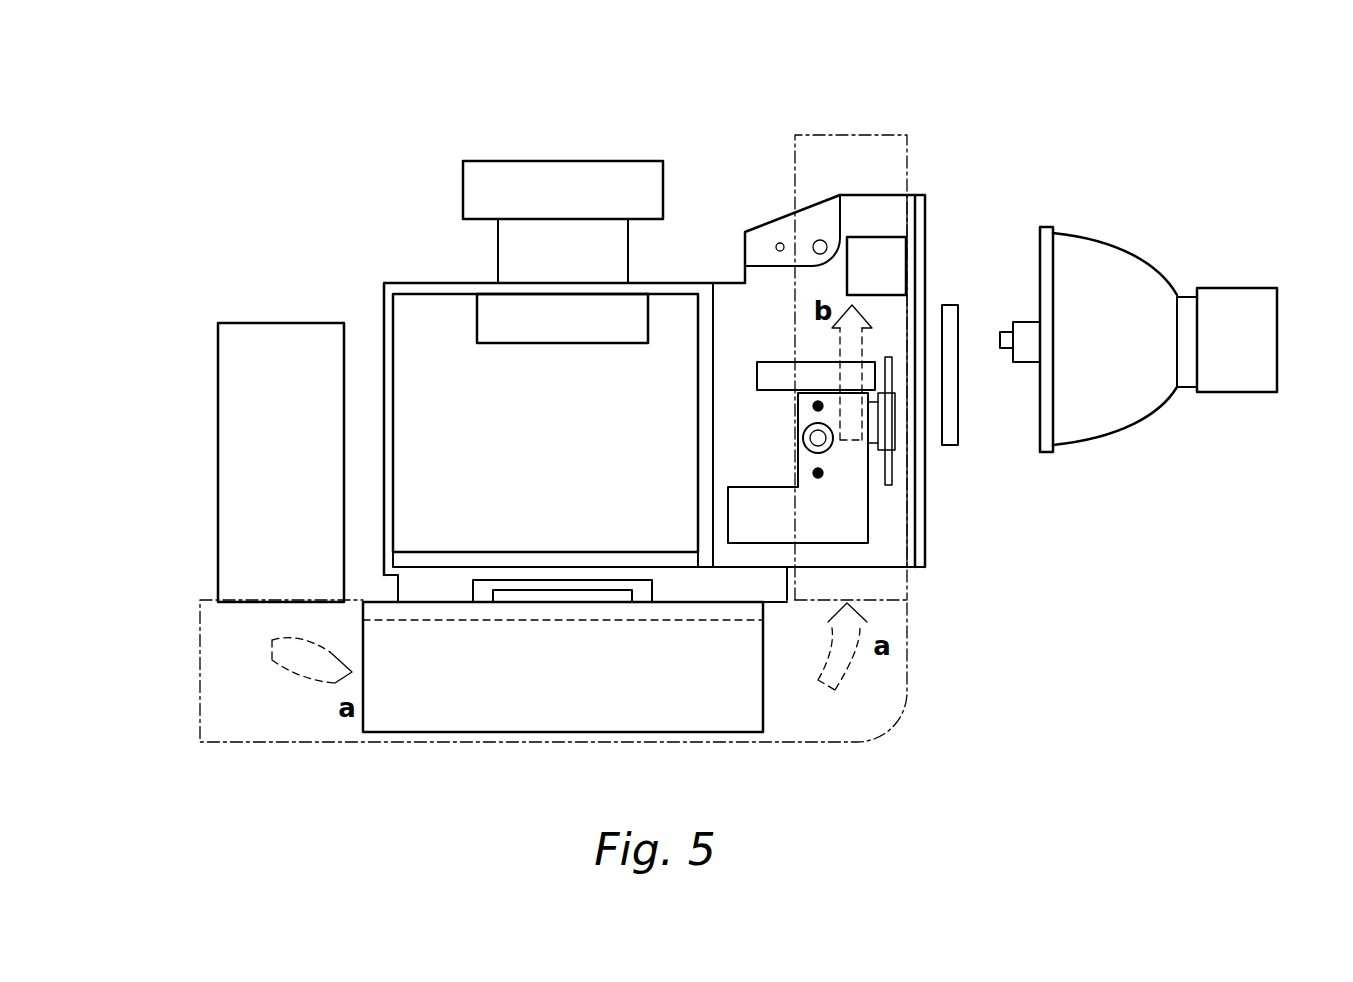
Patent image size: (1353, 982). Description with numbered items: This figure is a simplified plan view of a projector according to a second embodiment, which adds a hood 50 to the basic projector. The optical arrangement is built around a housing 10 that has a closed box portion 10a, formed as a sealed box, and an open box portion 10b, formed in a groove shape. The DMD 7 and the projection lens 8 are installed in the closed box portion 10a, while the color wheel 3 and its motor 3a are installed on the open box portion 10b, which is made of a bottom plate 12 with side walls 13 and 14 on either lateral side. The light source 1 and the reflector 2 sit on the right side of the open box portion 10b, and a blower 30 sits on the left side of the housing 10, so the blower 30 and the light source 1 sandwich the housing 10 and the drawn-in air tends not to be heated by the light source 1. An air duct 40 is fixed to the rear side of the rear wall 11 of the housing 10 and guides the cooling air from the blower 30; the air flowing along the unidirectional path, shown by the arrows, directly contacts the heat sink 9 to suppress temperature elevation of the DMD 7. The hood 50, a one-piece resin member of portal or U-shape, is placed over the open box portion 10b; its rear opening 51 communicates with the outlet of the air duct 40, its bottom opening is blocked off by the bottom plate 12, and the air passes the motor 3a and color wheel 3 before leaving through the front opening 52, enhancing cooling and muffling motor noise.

The light source 1 is at (1026, 365).
The reflector 2 is at (1095, 238).
The color wheel 3 is at (888, 477).
The motor 3a is at (873, 430).
The DMD 7 is at (548, 592).
The projection lens 8 is at (463, 186).
The heat sink 9 is at (505, 715).
The housing 10 is at (698, 282).
The closed box portion 10a is at (348, 268).
The open box portion 10b is at (770, 193).
The rear wall 11 is at (445, 580).
The bottom plate 12 is at (887, 568).
The side wall 13 is at (698, 422).
The side wall 14 is at (925, 255).
The blower 30 is at (218, 480).
The air duct 40 is at (857, 742).
The hood 50 is at (910, 173).
The rear opening 51 is at (873, 600).
The front opening 52 is at (830, 134).